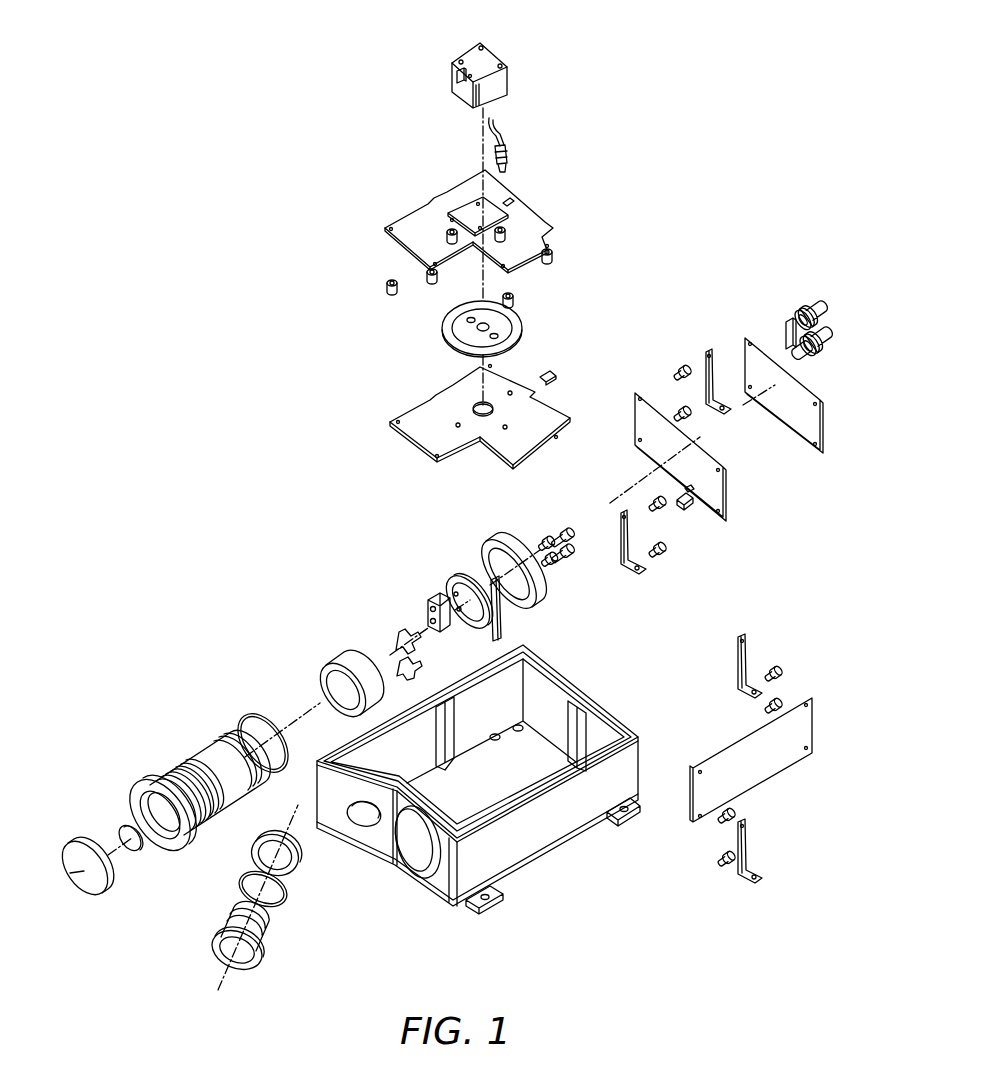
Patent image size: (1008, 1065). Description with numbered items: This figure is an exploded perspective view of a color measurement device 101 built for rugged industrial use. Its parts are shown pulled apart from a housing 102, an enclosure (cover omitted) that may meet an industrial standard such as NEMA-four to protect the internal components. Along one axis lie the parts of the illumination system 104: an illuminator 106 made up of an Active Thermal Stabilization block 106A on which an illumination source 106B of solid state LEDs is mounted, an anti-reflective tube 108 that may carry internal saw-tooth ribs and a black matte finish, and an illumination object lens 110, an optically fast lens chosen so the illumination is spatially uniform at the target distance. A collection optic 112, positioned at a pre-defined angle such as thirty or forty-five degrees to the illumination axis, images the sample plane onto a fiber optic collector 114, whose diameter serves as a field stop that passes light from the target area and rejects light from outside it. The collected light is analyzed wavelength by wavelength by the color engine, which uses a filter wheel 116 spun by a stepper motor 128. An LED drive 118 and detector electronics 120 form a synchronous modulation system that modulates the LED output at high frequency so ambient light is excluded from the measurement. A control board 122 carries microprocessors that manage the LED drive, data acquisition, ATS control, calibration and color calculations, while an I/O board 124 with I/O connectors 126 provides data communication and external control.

The color measurement device 101 is at (757, 596).
The housing 102 is at (558, 822).
The illumination system 104 is at (182, 750).
The illuminator 106 is at (505, 632).
The Active Thermal Stabilization block 106A is at (450, 597).
The illumination source 106B is at (427, 617).
The anti-reflective tube 108 is at (165, 767).
The illumination object lens 110 is at (65, 843).
The image-based collection optic 112 is at (235, 927).
The fiber optic collector 114 is at (507, 126).
The filter wheel 116 is at (452, 317).
The LED drive 118 is at (717, 773).
The detector electronics 120 is at (415, 415).
The control board 122 is at (713, 498).
The I/O board 124 is at (790, 413).
The I/O connectors 126 is at (828, 323).
The stepper motor 128 is at (470, 60).